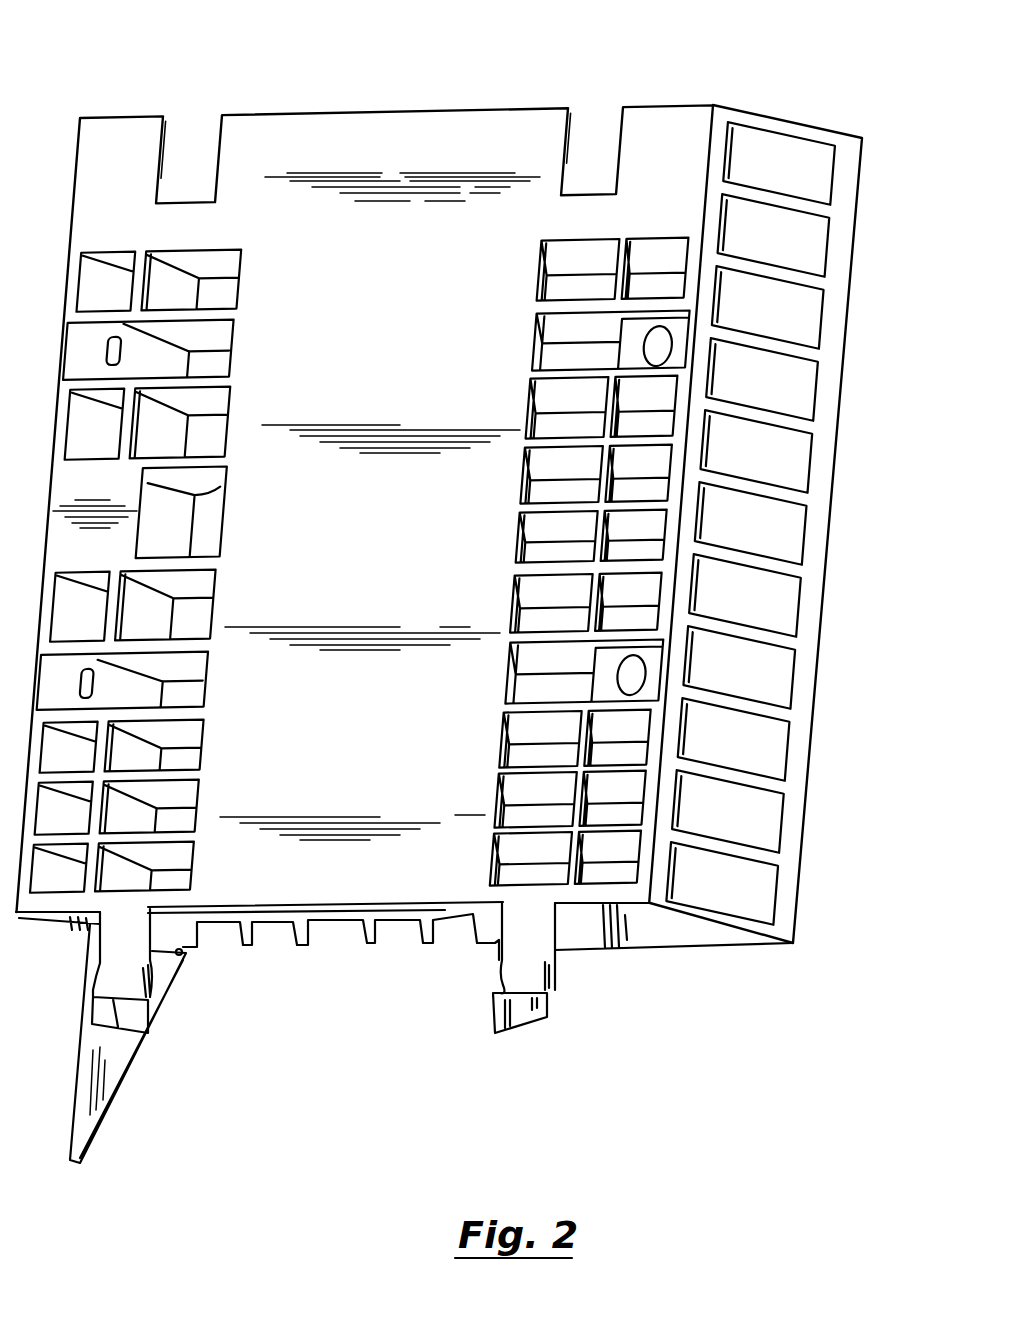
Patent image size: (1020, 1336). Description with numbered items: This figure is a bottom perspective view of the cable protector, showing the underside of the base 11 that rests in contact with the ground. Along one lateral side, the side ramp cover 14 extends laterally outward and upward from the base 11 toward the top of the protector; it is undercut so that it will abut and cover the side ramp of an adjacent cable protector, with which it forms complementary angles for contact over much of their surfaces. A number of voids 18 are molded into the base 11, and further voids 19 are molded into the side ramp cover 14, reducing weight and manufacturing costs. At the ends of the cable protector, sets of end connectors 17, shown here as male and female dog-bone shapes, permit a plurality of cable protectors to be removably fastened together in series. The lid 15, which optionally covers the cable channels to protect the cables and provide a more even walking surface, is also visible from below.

The base 11 is at (383, 530).
The side ramp cover 14 is at (823, 510).
The lid 15 is at (100, 1117).
The end connectors 17 is at (198, 137).
The voids 18 is at (205, 430).
The voids 19 is at (762, 680).